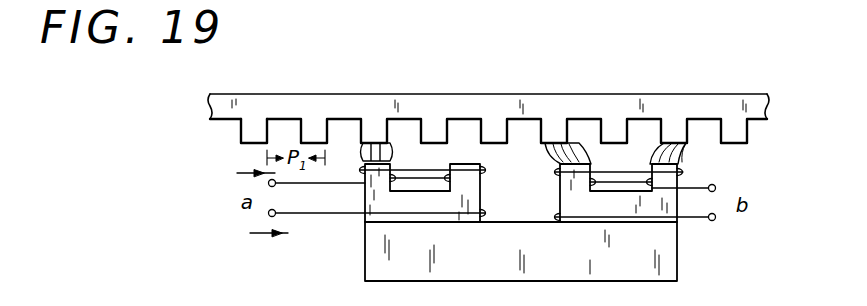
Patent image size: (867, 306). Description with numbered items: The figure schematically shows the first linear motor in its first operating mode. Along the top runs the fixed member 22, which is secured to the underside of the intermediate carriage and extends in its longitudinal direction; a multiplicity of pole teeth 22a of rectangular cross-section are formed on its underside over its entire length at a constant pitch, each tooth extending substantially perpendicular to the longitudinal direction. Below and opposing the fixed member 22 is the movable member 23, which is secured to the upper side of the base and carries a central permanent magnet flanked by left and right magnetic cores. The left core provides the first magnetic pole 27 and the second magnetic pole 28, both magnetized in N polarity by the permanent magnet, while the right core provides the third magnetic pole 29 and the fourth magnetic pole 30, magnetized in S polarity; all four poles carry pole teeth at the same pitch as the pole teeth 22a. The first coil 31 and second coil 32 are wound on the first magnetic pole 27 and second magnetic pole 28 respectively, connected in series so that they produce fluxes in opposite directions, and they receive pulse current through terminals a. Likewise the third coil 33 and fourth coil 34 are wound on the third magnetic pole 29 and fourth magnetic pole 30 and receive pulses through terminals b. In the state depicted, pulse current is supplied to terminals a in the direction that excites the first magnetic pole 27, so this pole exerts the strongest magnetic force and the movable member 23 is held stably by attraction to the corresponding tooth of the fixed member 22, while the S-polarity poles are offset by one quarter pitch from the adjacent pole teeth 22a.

The fixed member 22 is at (254, 93).
The pole teeth 22a is at (243, 131).
The movable member 23 is at (363, 262).
The first magnetic pole 27 is at (392, 163).
The second magnetic pole 28 is at (467, 163).
The third magnetic pole 29 is at (592, 164).
The fourth magnetic pole 30 is at (647, 164).
The first coil 31 is at (358, 166).
The second coil 32 is at (440, 177).
The third coil 33 is at (552, 167).
The fourth coil 34 is at (684, 172).